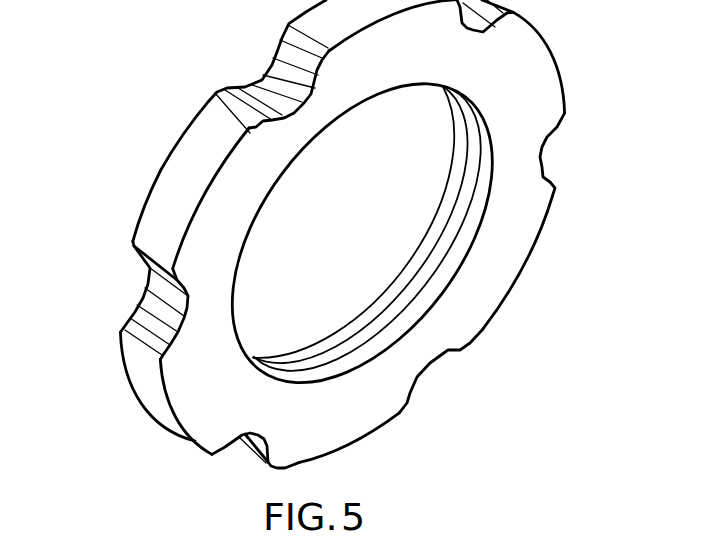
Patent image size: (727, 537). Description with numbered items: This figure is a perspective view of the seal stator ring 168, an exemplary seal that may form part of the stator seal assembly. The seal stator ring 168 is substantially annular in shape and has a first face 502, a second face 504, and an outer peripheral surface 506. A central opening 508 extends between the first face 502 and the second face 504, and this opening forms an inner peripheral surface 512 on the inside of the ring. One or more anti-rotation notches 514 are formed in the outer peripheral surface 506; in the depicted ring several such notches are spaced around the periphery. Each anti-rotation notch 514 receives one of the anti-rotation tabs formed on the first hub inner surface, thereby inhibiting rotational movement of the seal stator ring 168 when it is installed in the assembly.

The seal stator ring 168 is at (344, 234).
The first face 502 is at (223, 382).
The second face 504 is at (178, 148).
The outer peripheral surface 506 is at (162, 208).
The central opening 508 is at (425, 174).
The inner peripheral surface 512 is at (401, 281).
The anti-rotation notch 514 is at (131, 292).